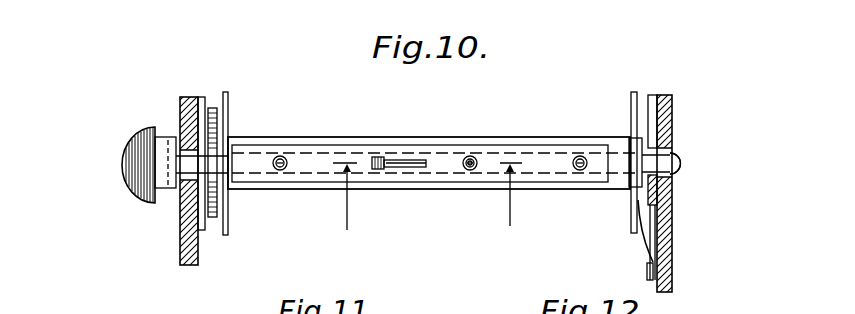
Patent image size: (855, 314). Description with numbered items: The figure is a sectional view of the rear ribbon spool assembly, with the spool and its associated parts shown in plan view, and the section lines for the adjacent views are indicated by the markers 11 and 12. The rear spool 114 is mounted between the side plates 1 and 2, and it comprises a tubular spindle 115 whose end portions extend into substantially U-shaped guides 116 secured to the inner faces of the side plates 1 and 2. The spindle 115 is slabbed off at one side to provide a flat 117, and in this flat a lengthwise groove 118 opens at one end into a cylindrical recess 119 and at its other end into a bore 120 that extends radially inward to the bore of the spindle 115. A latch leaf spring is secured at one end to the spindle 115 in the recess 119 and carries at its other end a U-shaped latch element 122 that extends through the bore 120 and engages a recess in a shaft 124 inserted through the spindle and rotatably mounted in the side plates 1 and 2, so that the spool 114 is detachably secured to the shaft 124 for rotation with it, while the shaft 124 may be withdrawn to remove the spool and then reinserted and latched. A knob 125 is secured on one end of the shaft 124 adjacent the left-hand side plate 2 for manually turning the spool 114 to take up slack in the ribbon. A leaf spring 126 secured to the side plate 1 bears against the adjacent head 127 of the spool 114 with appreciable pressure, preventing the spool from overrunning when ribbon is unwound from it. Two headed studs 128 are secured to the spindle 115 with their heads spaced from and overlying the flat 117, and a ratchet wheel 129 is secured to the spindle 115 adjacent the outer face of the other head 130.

The side plate 1 is at (664, 107).
The side plate 2 is at (180, 108).
The section line 11- 11 is at (427, 200).
The section indication 12 is at (163, 301).
The rear spool 114 is at (564, 134).
The tubular spindle 115 is at (516, 136).
The U-shaped guides 116 is at (201, 97).
The flat 117 is at (320, 147).
The lengthwise groove 118 is at (400, 152).
The cylindrical recess 119 is at (473, 153).
The bore 120 is at (380, 170).
The U-shaped latch element 122 is at (382, 158).
The shaft 124 is at (669, 172).
The knob 125 is at (135, 174).
The leaf spring 126 is at (641, 236).
The head 127 is at (628, 92).
The headed studs 128 is at (281, 171).
The ratchet wheel 129 is at (208, 213).
The head 130 is at (228, 95).